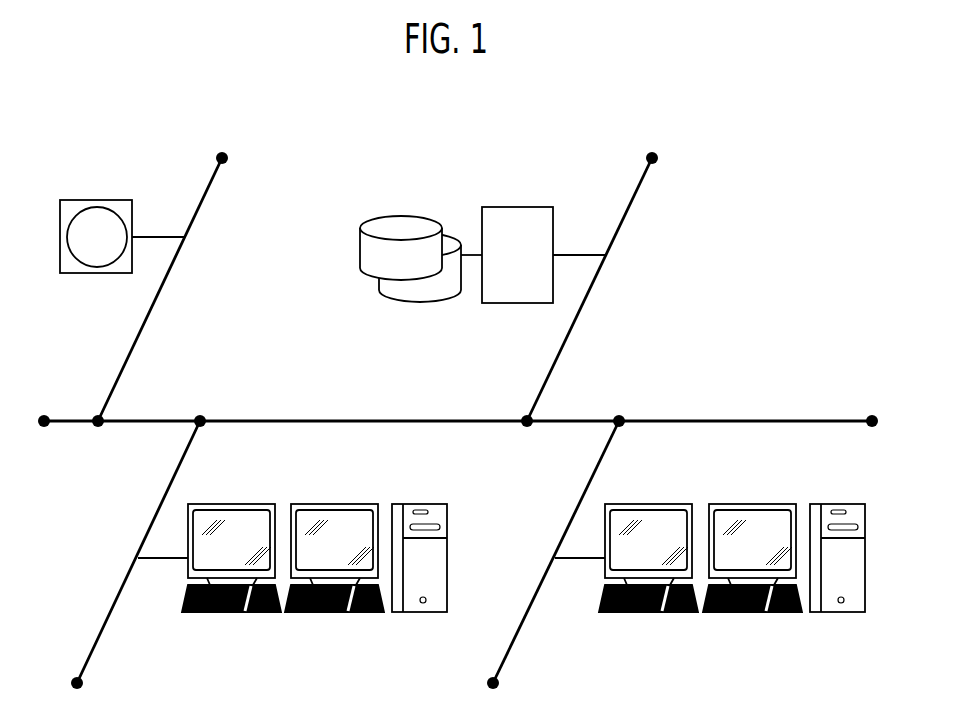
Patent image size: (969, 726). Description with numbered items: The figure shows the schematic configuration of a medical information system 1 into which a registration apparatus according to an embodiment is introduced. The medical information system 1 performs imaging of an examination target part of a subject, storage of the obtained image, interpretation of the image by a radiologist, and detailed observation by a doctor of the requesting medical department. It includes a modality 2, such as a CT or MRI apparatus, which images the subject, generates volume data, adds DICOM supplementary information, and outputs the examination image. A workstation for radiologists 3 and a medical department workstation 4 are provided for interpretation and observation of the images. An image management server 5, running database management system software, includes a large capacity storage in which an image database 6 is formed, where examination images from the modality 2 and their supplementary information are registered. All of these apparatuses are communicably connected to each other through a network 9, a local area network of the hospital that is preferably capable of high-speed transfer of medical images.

The medical information system 1 is at (845, 136).
The modality 2 is at (123, 198).
The workstation for radiologists 3 is at (447, 590).
The medical department workstation 4 is at (863, 590).
The image management server 5 is at (512, 206).
The image database 6 is at (377, 215).
The network 9 is at (840, 420).